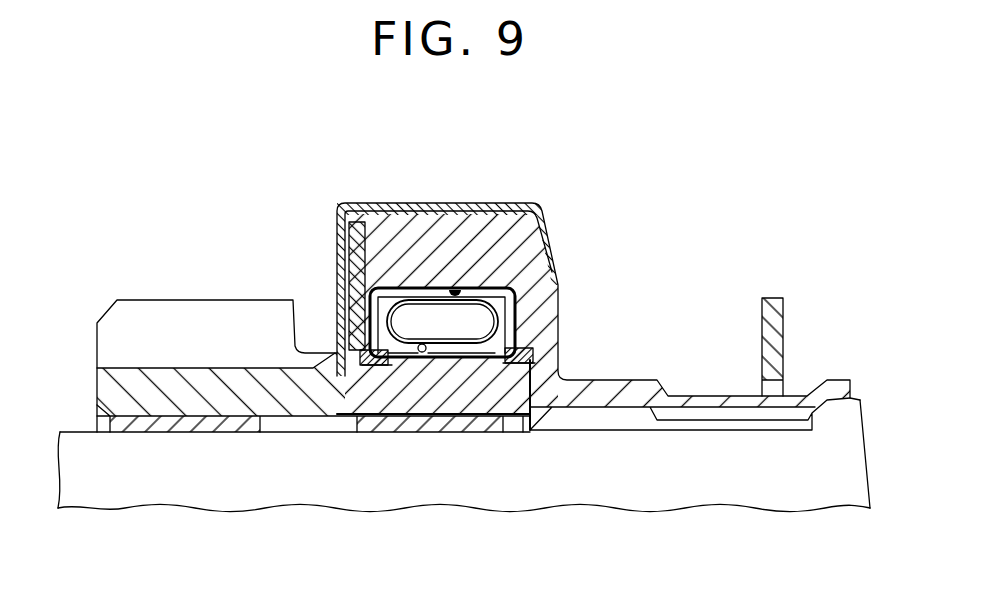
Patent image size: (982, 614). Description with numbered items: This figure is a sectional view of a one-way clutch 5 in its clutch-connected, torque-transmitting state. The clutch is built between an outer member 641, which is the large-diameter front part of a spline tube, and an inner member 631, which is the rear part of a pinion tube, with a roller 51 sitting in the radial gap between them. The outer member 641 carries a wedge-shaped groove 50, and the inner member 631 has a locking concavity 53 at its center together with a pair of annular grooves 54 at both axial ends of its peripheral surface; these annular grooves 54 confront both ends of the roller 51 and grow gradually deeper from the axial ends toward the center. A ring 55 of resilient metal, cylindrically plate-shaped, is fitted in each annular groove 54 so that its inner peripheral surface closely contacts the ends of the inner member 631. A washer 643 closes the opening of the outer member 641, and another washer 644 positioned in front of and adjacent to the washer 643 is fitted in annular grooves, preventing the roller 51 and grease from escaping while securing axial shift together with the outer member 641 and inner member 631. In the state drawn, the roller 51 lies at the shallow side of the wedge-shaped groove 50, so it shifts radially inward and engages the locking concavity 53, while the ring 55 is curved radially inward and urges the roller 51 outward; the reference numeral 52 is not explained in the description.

The one-way clutch 5 is at (565, 265).
The outer member 641 is at (541, 204).
The washer 644 is at (340, 228).
The washer 643 is at (362, 242).
The inner member 631 is at (445, 395).
The ring 55 is at (533, 357).
The annular grooves 54 is at (388, 365).
The locking concavity 53 is at (422, 352).
The battery case 52 is at (402, 305).
The roller 51 is at (430, 317).
The wedge-shaped groove 50 is at (457, 293).